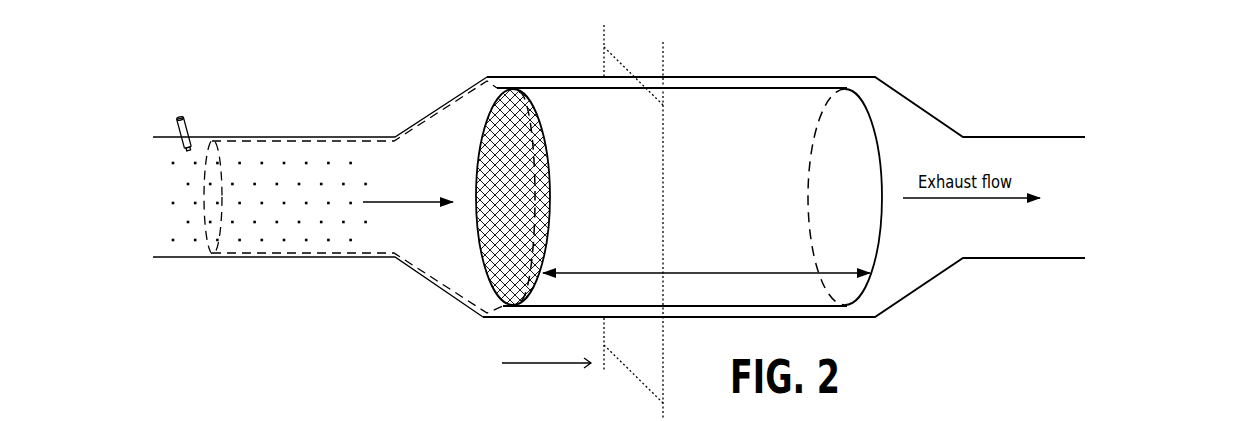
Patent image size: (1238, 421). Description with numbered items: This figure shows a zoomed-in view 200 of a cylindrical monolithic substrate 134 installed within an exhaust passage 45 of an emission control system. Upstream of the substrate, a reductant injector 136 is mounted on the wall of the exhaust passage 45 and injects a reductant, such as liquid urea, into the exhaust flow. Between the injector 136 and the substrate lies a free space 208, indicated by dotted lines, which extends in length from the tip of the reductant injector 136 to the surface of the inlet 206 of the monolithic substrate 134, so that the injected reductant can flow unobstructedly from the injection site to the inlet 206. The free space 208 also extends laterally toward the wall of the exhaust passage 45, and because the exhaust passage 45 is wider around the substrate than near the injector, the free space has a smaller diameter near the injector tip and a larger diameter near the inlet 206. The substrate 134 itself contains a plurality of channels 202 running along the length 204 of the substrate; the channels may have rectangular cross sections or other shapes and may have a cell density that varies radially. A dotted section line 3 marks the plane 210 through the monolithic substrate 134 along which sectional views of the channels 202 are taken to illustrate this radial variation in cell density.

The zoomed-in view 200 is at (1159, 90).
The free space 208 is at (318, 139).
The inlet 206 is at (497, 90).
The exhaust passage 45 is at (695, 77).
The monolithic substrate 134 is at (768, 108).
The plurality of channels 202 is at (543, 193).
The length 204 is at (702, 272).
The plane 210 is at (663, 150).
The section line 3- 3 is at (585, 205).
The reductant injector 136 is at (181, 118).